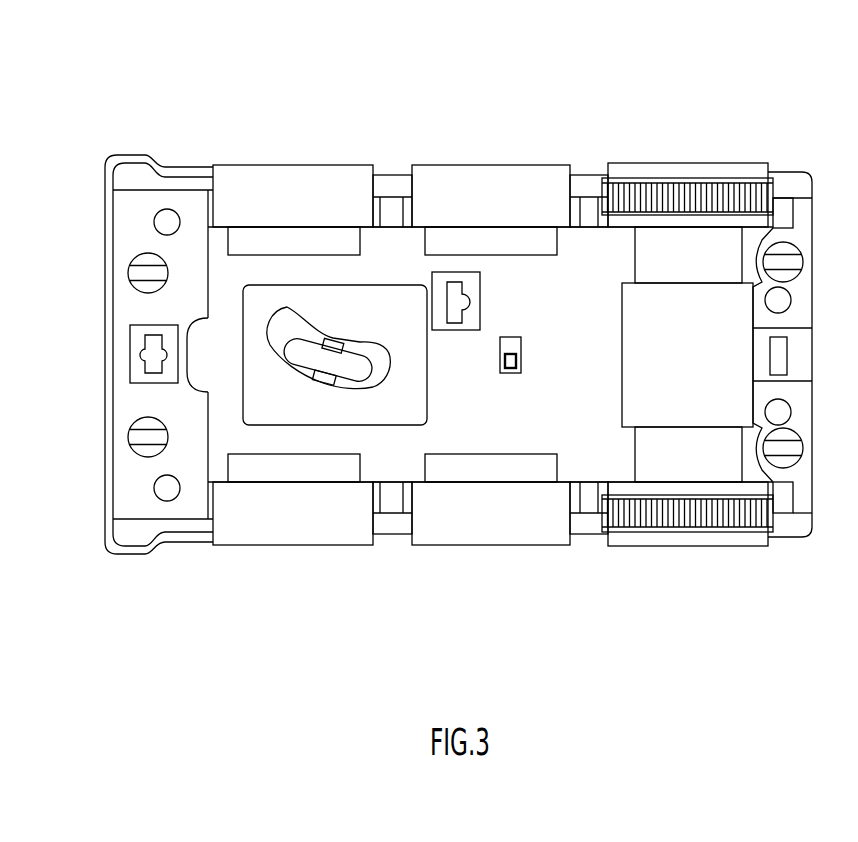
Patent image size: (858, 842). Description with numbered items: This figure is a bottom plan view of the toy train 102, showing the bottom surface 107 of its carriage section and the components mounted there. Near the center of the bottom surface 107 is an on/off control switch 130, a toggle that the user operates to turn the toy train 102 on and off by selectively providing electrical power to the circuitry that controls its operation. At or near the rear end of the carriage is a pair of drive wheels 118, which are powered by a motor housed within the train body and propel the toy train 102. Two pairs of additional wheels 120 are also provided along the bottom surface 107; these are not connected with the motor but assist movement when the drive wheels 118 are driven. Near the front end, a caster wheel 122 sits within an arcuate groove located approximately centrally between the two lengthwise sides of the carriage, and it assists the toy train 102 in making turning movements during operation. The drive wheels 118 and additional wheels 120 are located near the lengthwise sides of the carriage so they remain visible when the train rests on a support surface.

The toy train 102 is at (565, 70).
The bottom surface 107 is at (575, 428).
The drive wheels 118 is at (667, 185).
The additional wheels 120 is at (470, 165).
The caster wheel 122 is at (305, 357).
The on/off control switch 130 is at (498, 370).